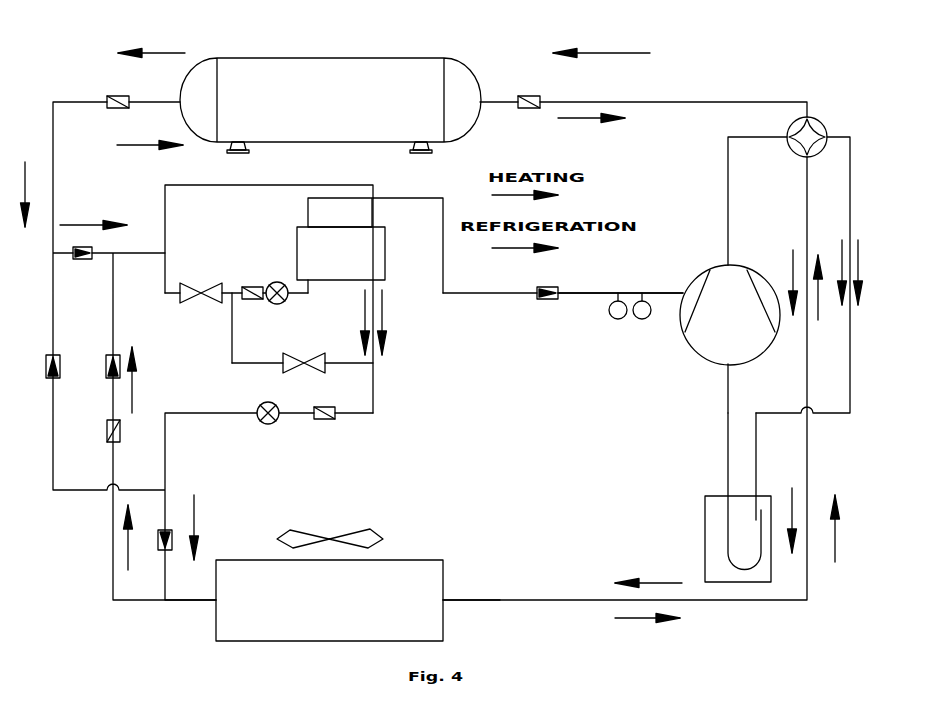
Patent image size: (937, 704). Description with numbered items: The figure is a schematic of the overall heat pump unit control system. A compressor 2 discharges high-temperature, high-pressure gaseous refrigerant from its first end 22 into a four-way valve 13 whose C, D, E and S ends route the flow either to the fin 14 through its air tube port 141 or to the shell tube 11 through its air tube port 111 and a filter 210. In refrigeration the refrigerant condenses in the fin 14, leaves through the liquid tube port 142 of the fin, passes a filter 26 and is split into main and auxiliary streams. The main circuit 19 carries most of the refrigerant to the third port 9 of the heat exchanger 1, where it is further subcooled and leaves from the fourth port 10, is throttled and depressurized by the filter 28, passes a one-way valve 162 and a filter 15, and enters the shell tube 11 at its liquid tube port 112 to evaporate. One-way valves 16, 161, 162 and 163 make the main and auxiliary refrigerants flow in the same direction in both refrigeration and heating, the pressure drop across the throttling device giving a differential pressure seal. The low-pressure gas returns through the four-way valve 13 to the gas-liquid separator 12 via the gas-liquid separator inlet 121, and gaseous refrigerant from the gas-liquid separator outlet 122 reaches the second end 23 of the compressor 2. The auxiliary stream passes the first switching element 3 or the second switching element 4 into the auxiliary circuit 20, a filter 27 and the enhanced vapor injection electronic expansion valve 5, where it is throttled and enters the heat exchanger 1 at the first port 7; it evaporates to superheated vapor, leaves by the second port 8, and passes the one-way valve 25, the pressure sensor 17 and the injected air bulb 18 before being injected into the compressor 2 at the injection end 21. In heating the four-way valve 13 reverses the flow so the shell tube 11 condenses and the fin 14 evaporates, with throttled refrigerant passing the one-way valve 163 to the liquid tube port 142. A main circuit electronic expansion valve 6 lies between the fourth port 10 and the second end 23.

The heat exchanger 1 is at (341, 253).
The compressor 2 is at (730, 315).
The first switching element 3 is at (201, 287).
The second switching element 4 is at (304, 356).
The enhanced vapor injection electronic expansion valve 5 is at (277, 285).
The main circuit electronic expansion valve 6 is at (268, 404).
The first port 7 is at (310, 282).
The second port 8 is at (305, 227).
The third port 9 is at (373, 227).
The fourth port 10 is at (377, 282).
The shell tube 11 is at (330, 105).
The gas-liquid separator 12 is at (738, 539).
The four-way valve 13 is at (810, 128).
The fin 14 is at (329, 585).
The filter 15 is at (121, 102).
The one-way valve 16 is at (82, 263).
The pressure sensor 17 is at (612, 318).
The injected air bulb 18 is at (640, 320).
The main circuit 19 is at (213, 185).
The auxiliary circuit 20 is at (233, 291).
The injection end 21 is at (683, 292).
The first end 22 is at (729, 265).
The second end 23 is at (725, 365).
The one-way valve 25 is at (547, 280).
The filter 26 is at (99, 431).
The filter 27 is at (257, 300).
The filter 28 is at (325, 410).
The air tube port of the shell tube 111 is at (483, 100).
The liquid tube port of the shell tube 112 is at (180, 101).
The gas-liquid separator inlet 121 is at (757, 495).
The gas-liquid separator outlet 122 is at (727, 495).
The air tube port of the fin 141 is at (444, 600).
The liquid tube port of the fin 142 is at (215, 600).
The one-way valve 161 is at (43, 375).
The one-way valve 162 is at (102, 375).
The one-way valve 163 is at (151, 548).
The filter 210 is at (531, 100).